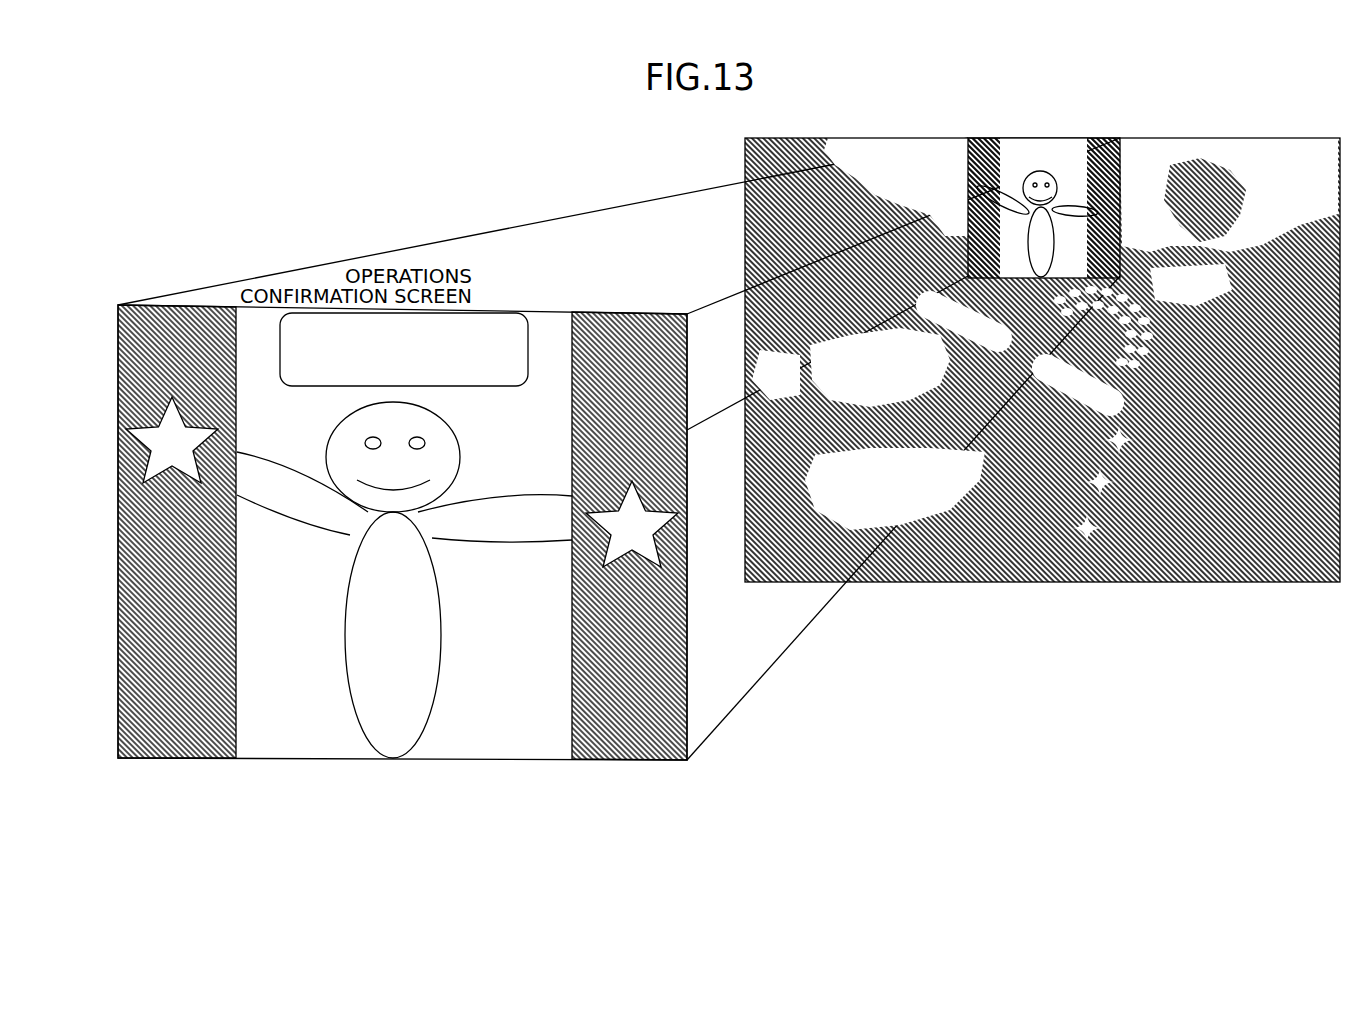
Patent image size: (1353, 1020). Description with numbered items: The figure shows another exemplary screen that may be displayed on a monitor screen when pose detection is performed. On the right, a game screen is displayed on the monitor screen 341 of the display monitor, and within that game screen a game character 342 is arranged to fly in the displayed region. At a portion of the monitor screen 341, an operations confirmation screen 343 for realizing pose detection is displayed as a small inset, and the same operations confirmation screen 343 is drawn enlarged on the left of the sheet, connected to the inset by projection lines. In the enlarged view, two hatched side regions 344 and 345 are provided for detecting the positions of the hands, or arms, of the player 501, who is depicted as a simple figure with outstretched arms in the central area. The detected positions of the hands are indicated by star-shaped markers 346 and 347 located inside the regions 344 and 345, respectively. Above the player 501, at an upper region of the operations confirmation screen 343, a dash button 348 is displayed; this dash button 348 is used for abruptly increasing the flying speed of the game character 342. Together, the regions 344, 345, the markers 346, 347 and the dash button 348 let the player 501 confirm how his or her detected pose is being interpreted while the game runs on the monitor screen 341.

The monitor screen 341 is at (1042, 402).
The game character 342 is at (932, 582).
The operations confirmation screen 343 is at (1062, 150).
The region 344 is at (118, 668).
The region 345 is at (688, 655).
The marker 346 is at (118, 418).
The marker 347 is at (688, 597).
The dash button 348 is at (487, 322).
The player 501 is at (395, 742).